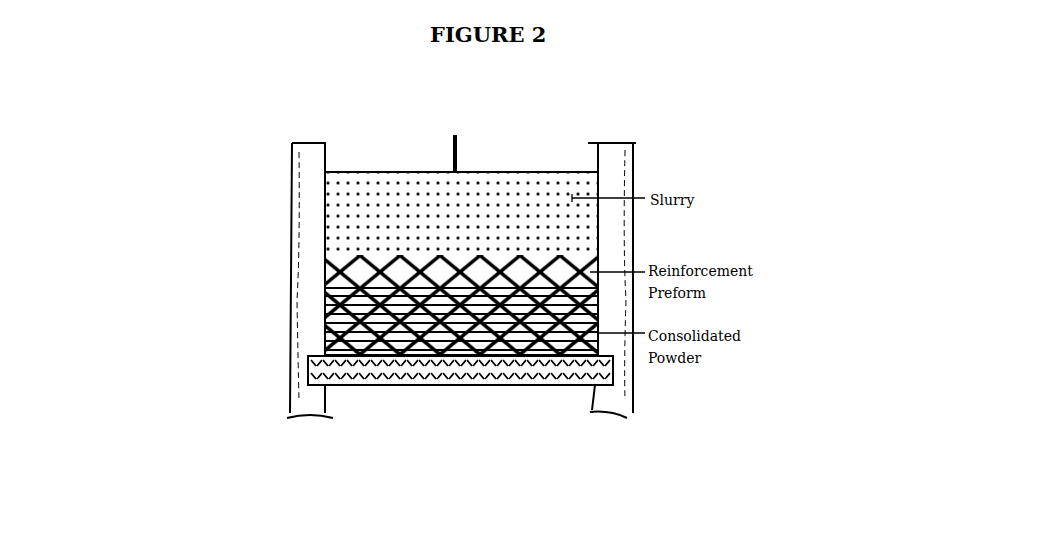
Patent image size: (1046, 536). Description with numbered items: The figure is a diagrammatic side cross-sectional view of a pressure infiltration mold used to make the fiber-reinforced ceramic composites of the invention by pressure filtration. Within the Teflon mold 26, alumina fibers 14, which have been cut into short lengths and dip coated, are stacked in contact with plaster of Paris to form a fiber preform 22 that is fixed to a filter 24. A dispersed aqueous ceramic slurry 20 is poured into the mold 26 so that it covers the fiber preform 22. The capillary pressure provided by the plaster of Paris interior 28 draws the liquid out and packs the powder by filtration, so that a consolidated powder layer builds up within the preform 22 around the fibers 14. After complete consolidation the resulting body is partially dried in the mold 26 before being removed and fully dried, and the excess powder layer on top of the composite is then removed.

The fibers 14 is at (470, 358).
The slurry 20 is at (635, 228).
The fiber preform 22 is at (597, 315).
The filter 24 is at (563, 386).
The Teflon mold 26 is at (635, 145).
The plaster of Paris interior 28 is at (603, 146).